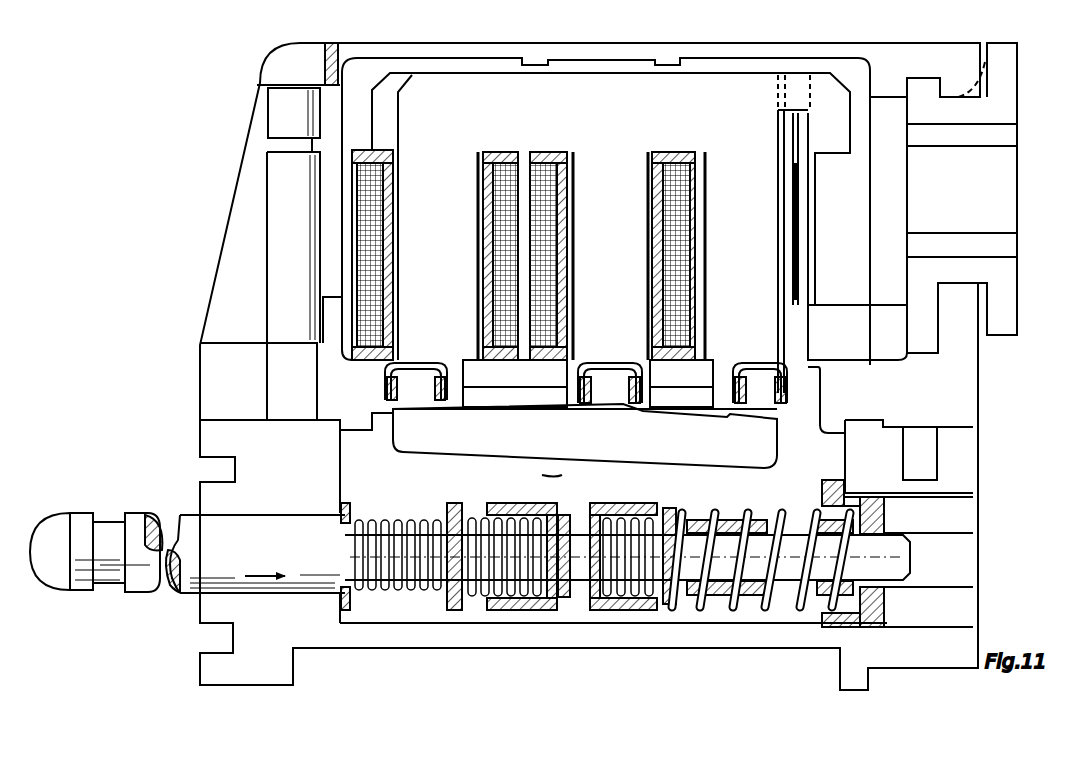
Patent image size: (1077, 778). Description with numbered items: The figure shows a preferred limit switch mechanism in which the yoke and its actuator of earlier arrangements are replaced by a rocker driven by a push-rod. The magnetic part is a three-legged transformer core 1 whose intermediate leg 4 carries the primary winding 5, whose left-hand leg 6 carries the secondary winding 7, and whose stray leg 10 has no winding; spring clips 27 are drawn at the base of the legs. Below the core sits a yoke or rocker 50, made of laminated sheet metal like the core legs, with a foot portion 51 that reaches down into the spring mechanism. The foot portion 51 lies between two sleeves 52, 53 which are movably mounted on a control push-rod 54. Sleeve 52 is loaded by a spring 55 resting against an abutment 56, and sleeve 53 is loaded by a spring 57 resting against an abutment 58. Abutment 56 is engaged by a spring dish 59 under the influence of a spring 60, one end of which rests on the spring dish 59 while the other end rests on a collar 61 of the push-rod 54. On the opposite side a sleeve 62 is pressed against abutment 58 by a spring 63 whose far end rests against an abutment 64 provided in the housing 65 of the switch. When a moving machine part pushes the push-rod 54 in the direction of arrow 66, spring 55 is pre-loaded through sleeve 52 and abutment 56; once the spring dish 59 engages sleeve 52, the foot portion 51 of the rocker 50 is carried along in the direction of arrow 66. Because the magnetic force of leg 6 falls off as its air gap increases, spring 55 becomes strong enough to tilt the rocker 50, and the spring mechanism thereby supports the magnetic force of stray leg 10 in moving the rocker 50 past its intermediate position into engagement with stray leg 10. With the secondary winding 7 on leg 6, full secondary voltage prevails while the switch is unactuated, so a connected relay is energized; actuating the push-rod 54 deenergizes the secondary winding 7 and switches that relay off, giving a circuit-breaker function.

The three-legged transformer core 1 is at (607, 97).
The intermediate leg 4 is at (615, 294).
The primary winding 5 is at (684, 244).
The leg 6 is at (396, 255).
The secondary winding 7 is at (378, 243).
The stray leg 10 is at (751, 338).
The spring clip 27 is at (445, 378).
The yoke or rocker 50 is at (446, 444).
The foot portion 51 is at (558, 476).
The sleeve 52 is at (557, 610).
The sleeve 53 is at (622, 514).
The control push-rod 54 is at (470, 568).
The spring 55 is at (511, 582).
The abutment 56 is at (466, 512).
The spring 57 is at (624, 580).
The abutment 58 is at (668, 510).
The spring dish 59 is at (453, 612).
The spring 60 is at (388, 595).
The collar 61 is at (360, 560).
The sleeve 62 is at (733, 514).
The spring 63 is at (738, 612).
The abutment 64 is at (878, 519).
The housing 65 is at (985, 474).
The arrow 66 is at (247, 580).